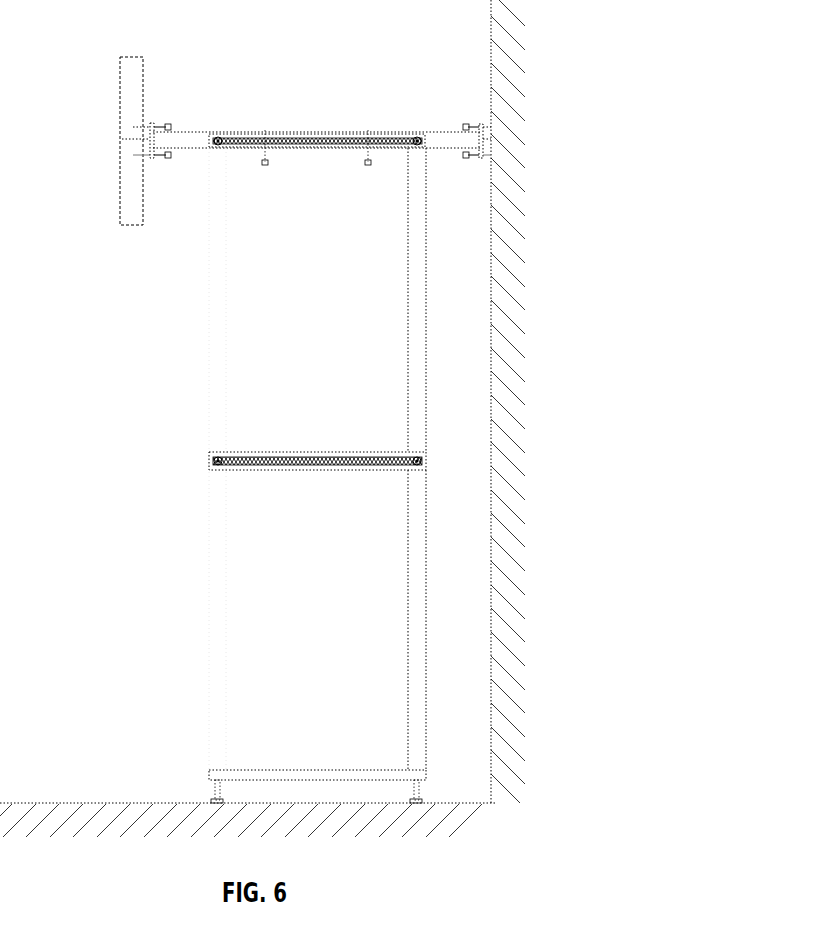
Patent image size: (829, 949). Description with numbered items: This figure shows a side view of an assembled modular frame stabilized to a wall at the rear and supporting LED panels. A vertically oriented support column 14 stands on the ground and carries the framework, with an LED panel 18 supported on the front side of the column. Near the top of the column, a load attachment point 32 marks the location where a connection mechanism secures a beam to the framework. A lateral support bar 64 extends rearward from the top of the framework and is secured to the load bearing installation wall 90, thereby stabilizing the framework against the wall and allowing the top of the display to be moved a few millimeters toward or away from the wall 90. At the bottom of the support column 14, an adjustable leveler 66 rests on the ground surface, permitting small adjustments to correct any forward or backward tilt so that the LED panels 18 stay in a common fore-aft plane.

The support column 14 is at (225, 708).
The LED panel 18 is at (120, 105).
The load attachment point 32 is at (156, 110).
The support bar 64 is at (449, 131).
The adjustable leveler 66 is at (213, 793).
The installation wall 90 is at (491, 85).